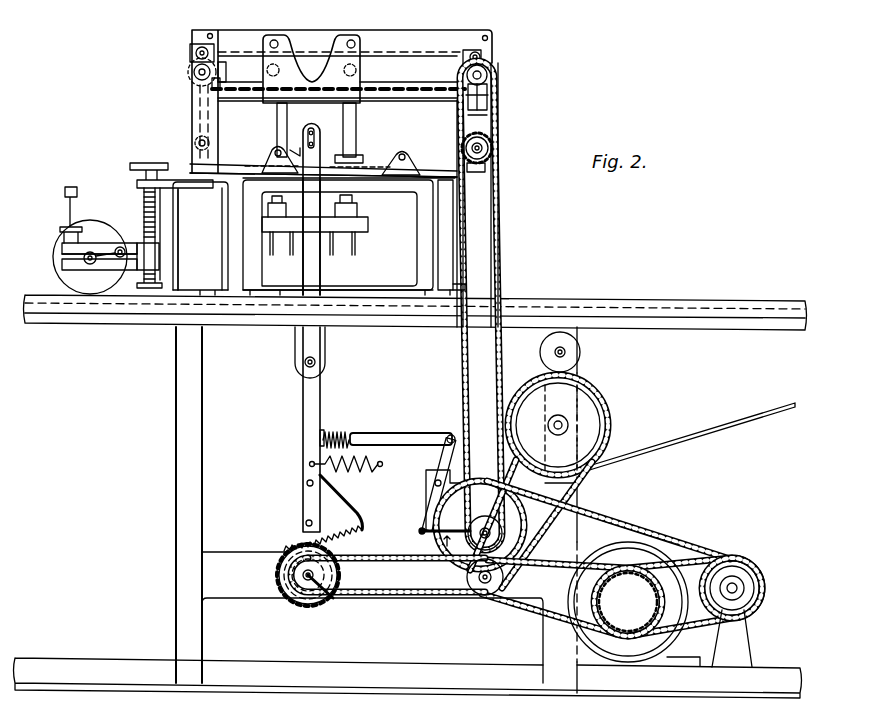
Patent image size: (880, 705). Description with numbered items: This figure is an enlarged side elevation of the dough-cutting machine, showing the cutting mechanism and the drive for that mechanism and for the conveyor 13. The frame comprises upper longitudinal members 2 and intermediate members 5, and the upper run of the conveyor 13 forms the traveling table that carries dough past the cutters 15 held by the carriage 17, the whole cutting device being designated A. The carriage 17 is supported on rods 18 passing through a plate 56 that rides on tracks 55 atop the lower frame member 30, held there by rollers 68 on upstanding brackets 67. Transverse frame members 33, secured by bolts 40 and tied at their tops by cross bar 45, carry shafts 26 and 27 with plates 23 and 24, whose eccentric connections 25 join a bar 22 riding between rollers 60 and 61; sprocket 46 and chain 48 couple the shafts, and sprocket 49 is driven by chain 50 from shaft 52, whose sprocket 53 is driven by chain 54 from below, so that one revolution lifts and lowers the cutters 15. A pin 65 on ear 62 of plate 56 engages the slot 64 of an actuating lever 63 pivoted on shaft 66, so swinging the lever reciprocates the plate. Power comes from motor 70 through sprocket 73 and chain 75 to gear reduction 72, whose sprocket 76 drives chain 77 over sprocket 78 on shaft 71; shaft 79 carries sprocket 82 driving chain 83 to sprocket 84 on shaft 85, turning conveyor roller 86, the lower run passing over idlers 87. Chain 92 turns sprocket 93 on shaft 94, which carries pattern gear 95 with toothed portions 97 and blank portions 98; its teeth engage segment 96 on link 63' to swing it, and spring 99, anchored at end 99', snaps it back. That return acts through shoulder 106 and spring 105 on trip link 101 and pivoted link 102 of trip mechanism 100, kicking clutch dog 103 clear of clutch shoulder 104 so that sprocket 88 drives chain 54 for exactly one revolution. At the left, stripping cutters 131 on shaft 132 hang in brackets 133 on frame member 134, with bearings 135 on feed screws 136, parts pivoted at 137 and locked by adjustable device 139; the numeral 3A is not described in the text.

The upper longitudinal frame member 2 is at (709, 316).
The intermediate frame member 5 is at (175, 495).
The endless conveyor 13 is at (730, 405).
The cutters 15 is at (352, 248).
The carriage 17 is at (372, 228).
The rods 18 is at (357, 125).
The bar 22 is at (390, 52).
The plate 23 is at (210, 80).
The plate 24 is at (488, 90).
The eccentric connections 25 is at (190, 50).
The shaft 26 is at (188, 72).
The shaft 27 is at (490, 76).
The lower frame member 30 is at (447, 258).
The frame member 33 is at (484, 104).
The bar 3A is at (197, 98).
The bolts 40 is at (196, 150).
The cross bar 45 is at (423, 42).
The sprocket 46 is at (222, 76).
The chain 48 is at (423, 95).
The sprocket 49 is at (455, 93).
The chain 50 is at (458, 118).
The shaft 52 is at (494, 140).
The sprocket 53 is at (490, 148).
The chain 54 is at (499, 238).
The track 55 is at (498, 186).
The plate 56 is at (372, 170).
The roller 60 is at (268, 42).
The roller 61 is at (358, 45).
The ear 62 is at (297, 150).
The actuating lever 63 is at (338, 236).
The link 63' is at (291, 429).
The elongated slot 64 is at (318, 121).
The pin 65 is at (323, 152).
The shaft 66 is at (296, 366).
The upstanding brackets 67 is at (262, 160).
The rollers 68 is at (270, 150).
The motor 70 is at (640, 540).
The shaft 71 is at (503, 540).
The gear reduction 72 is at (760, 585).
The sprocket 73 is at (668, 565).
The chain 75 is at (722, 540).
The second sprocket 76 is at (735, 562).
The chain 77 is at (625, 522).
The sprocket 78 is at (572, 508).
The shaft 79 is at (485, 595).
The sprocket 82 is at (500, 595).
The chain 83 is at (592, 468).
The sprocket 84 is at (590, 440).
The shaft 85 is at (570, 425).
The conveyor roller 86 is at (590, 400).
The idlers 87 is at (582, 350).
The sprocket 88 is at (465, 525).
The chain 92 is at (423, 600).
The sprocket 93 is at (290, 600).
The shaft 94 is at (330, 600).
The pattern gear 95 is at (276, 573).
The toothed segment 96 is at (345, 510).
The toothed portions 97 is at (265, 597).
The blank portions 98 is at (298, 610).
The spring 99 is at (356, 471).
The end of spring 99' is at (422, 490).
The trip mechanism 100 is at (435, 425).
The trip link 101 is at (366, 430).
The pivoted link 102 is at (360, 527).
The clutch dog 103 is at (425, 536).
The clutch shoulder 104 is at (388, 598).
The spring 105 is at (340, 435).
The shoulder 106 is at (322, 412).
The rotating cutters 131 is at (55, 258).
The shaft 132 is at (82, 242).
The brackets 133 is at (72, 272).
The frame member 134 is at (178, 202).
The bearings / movable parts 135 is at (108, 243).
The feed screws 136 is at (158, 228).
The pivot 137 is at (120, 246).
The adjustable device 139 is at (67, 207).
The cutting device A is at (274, 124).